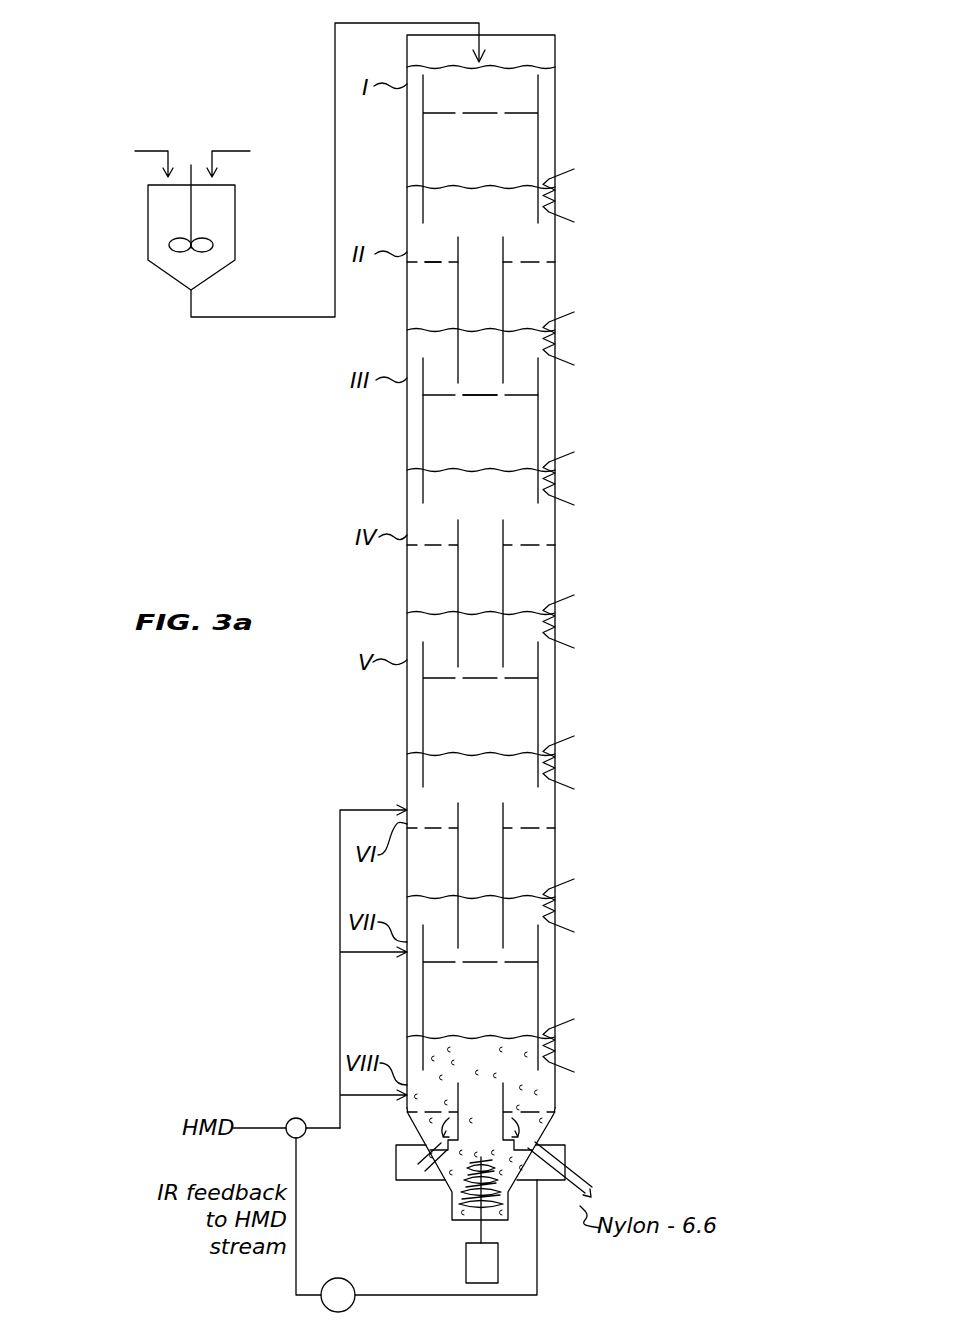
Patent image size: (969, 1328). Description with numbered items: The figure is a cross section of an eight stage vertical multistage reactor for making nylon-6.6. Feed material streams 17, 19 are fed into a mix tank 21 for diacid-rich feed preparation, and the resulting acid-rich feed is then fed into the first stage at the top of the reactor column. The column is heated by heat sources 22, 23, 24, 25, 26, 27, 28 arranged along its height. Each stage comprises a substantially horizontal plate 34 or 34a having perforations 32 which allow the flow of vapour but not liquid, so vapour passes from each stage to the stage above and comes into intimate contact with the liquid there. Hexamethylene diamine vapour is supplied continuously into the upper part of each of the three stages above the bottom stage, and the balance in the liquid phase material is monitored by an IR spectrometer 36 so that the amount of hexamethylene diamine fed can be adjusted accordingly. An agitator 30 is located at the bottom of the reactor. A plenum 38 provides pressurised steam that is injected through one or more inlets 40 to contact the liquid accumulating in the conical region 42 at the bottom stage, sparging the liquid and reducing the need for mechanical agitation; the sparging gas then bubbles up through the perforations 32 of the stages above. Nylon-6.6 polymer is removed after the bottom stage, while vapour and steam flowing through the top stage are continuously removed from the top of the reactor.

The feed material stream 17 is at (154, 149).
The feed material stream 19 is at (229, 149).
The mix tank 21 is at (148, 228).
The heat source 22 is at (577, 169).
The heat source 23 is at (577, 312).
The heat source 24 is at (577, 452).
The heat source 25 is at (577, 595).
The heat source 26 is at (577, 736).
The heat source 27 is at (577, 879).
The heat source 28 is at (577, 1019).
The agitator 30 is at (493, 1210).
The perforations 32 is at (540, 262).
The plate 34 is at (470, 393).
The plate 34a is at (435, 262).
The IR spectrometer 36 is at (345, 1278).
The plenum 38 is at (557, 1158).
The inlet 40 is at (430, 1167).
The conical region 42 is at (540, 1123).